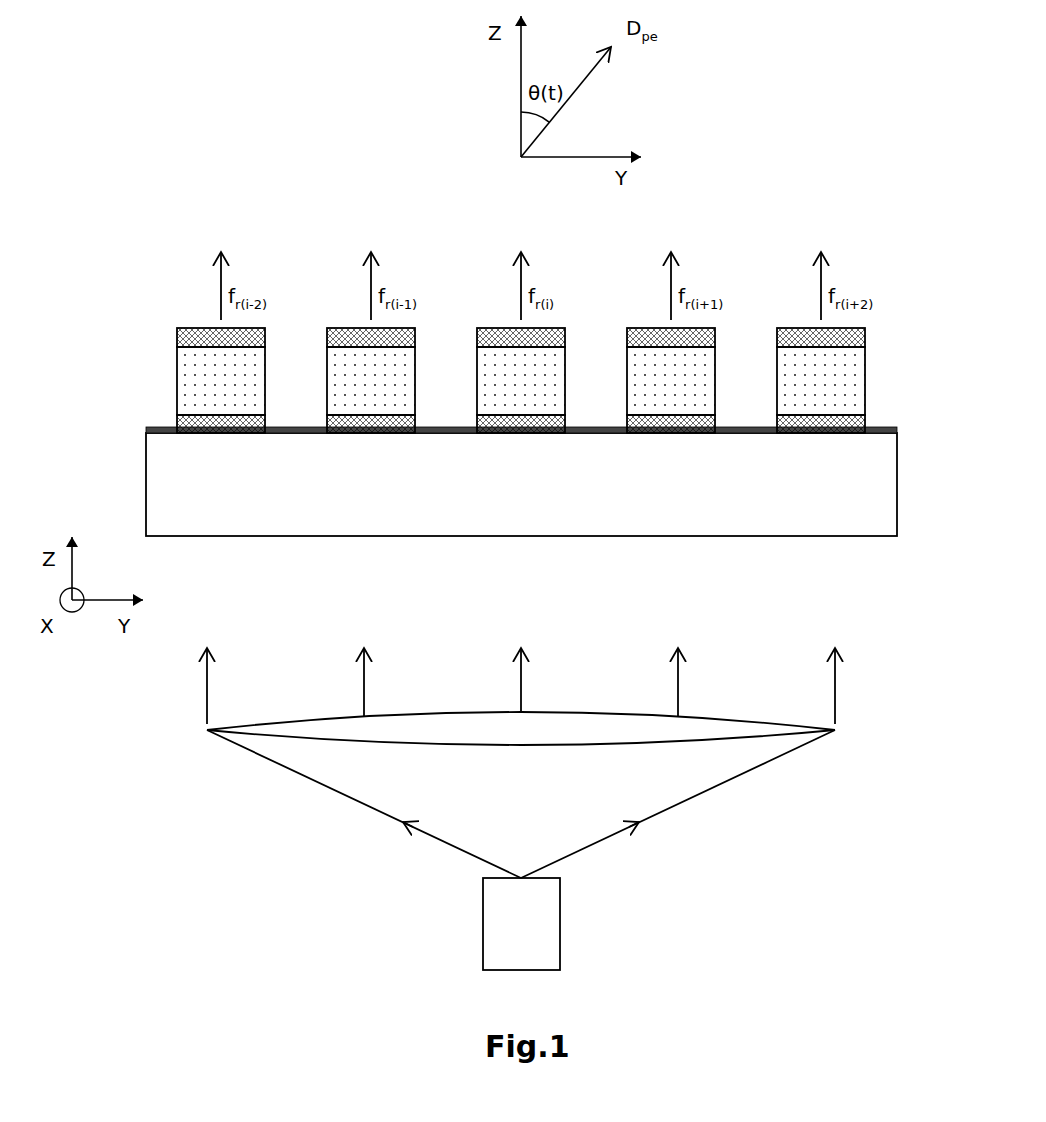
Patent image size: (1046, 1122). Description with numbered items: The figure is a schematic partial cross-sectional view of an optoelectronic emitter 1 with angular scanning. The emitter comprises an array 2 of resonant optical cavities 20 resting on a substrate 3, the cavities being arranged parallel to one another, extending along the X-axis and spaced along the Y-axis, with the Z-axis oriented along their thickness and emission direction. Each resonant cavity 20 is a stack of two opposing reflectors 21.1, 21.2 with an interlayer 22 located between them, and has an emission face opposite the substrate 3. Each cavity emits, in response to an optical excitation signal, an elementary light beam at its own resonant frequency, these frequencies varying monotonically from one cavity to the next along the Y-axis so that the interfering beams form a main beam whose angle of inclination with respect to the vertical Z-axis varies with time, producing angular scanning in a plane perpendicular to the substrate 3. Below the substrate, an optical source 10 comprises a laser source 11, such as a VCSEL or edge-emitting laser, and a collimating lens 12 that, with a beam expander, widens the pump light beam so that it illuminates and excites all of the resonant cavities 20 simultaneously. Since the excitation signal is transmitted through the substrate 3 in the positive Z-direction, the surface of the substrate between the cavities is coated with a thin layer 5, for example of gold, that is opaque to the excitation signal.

The optoelectronic emitter 1 is at (131, 252).
The array of resonant optical cavities 2 is at (894, 361).
The substrate 3 is at (899, 483).
The opaque thin layer 5 is at (902, 429).
The resonant cavity 20 is at (469, 409).
The reflector 21.1 is at (175, 427).
The reflector 21.2 is at (175, 338).
The interlayer 22 is at (175, 380).
The optical source 10 is at (273, 893).
The laser source 11 is at (481, 923).
The collimating lens 12 is at (198, 731).